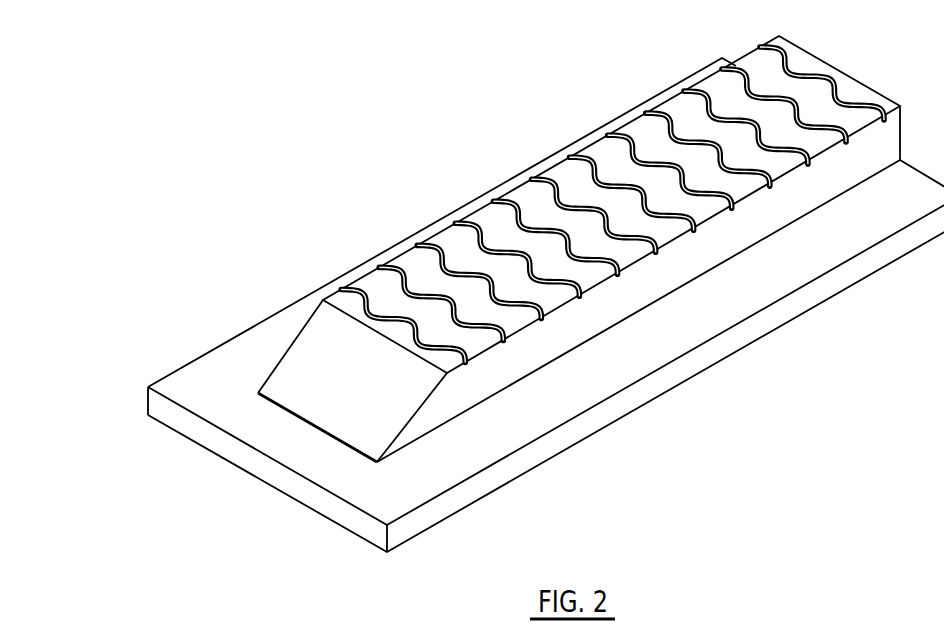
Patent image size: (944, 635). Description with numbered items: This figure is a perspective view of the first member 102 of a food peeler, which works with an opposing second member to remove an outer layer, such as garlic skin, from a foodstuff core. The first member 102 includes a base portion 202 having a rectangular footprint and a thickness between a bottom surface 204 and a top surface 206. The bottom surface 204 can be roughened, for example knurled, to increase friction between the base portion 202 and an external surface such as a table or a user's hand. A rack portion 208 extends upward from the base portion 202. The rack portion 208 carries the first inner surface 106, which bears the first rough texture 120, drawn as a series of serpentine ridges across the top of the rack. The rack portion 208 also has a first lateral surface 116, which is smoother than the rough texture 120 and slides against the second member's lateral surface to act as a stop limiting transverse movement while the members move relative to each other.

The first member 102 is at (428, 115).
The first inner surface 106 is at (685, 112).
The first lateral surface 116 is at (663, 267).
The first rough texture 120 is at (380, 267).
The base portion 202 is at (148, 402).
The bottom surface 204 is at (520, 477).
The top surface 206 is at (652, 334).
The rack portion 208 is at (348, 379).